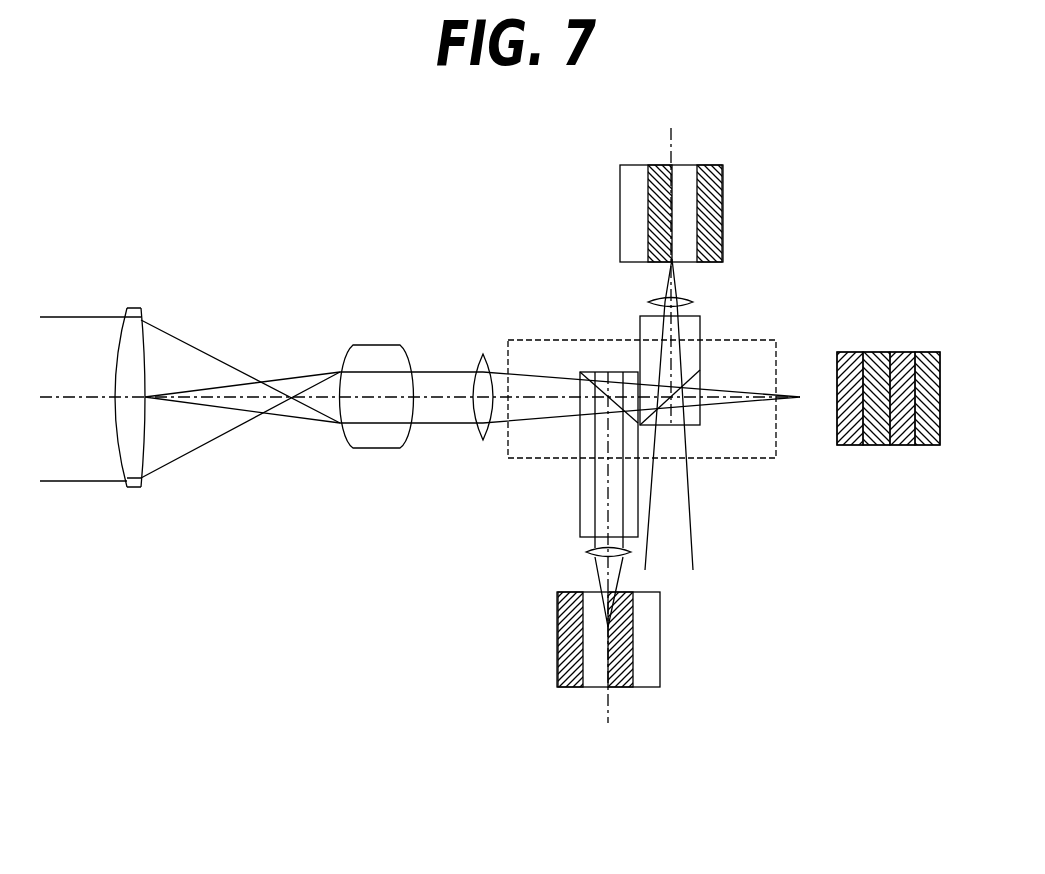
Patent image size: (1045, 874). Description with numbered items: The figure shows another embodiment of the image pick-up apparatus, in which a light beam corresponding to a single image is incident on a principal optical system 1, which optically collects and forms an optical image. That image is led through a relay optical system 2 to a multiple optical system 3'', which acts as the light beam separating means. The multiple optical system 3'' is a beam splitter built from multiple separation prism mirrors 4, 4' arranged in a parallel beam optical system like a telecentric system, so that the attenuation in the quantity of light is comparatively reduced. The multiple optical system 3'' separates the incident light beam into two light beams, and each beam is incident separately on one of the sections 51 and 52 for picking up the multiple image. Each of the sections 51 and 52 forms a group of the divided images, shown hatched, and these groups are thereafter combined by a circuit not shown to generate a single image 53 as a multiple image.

The principal optical system 1 is at (130, 488).
The relay optical system 2 is at (378, 450).
The multiple optical system 3'' is at (672, 367).
The multiple separation prism mirror 4 is at (694, 409).
The multiple separation prism mirror 4' is at (564, 482).
The section for picking up the multiple image 51 is at (556, 648).
The section for picking up the multiple image 52 is at (683, 170).
The single image 53 is at (897, 351).